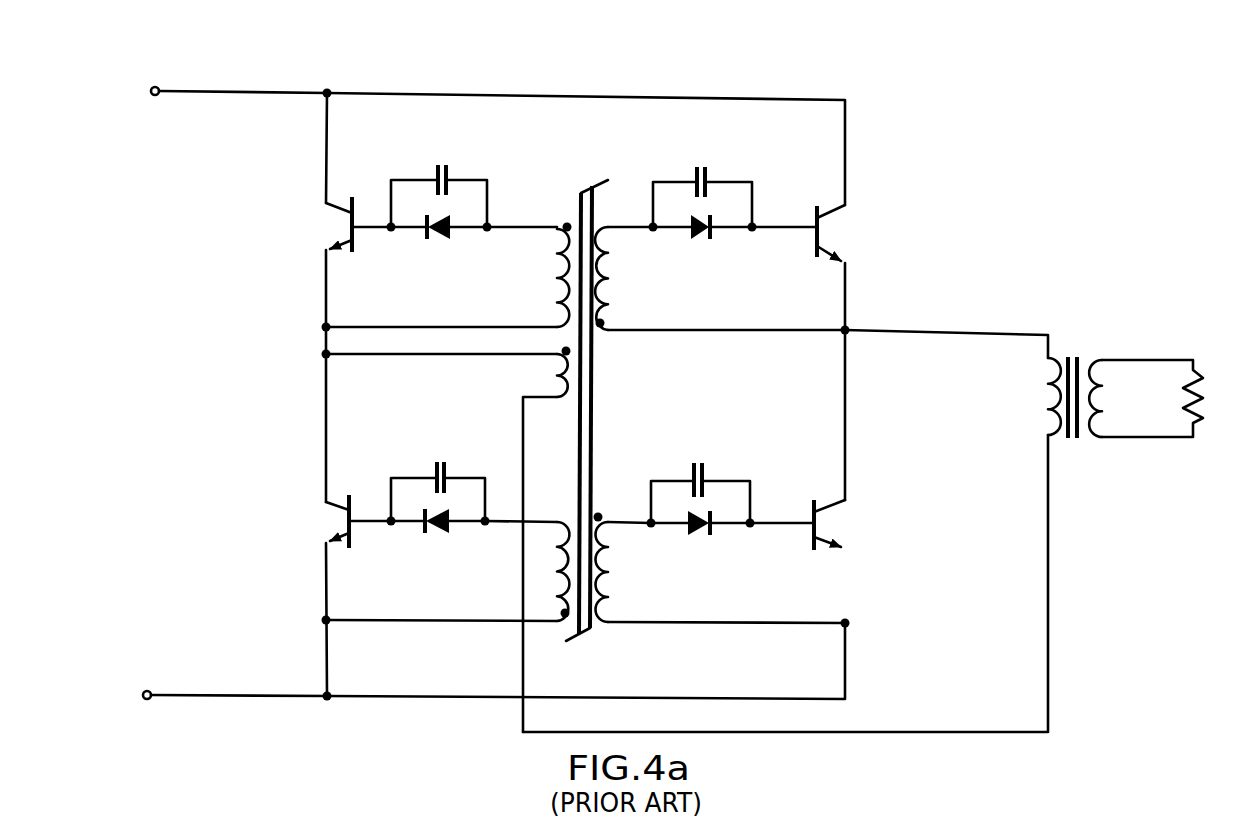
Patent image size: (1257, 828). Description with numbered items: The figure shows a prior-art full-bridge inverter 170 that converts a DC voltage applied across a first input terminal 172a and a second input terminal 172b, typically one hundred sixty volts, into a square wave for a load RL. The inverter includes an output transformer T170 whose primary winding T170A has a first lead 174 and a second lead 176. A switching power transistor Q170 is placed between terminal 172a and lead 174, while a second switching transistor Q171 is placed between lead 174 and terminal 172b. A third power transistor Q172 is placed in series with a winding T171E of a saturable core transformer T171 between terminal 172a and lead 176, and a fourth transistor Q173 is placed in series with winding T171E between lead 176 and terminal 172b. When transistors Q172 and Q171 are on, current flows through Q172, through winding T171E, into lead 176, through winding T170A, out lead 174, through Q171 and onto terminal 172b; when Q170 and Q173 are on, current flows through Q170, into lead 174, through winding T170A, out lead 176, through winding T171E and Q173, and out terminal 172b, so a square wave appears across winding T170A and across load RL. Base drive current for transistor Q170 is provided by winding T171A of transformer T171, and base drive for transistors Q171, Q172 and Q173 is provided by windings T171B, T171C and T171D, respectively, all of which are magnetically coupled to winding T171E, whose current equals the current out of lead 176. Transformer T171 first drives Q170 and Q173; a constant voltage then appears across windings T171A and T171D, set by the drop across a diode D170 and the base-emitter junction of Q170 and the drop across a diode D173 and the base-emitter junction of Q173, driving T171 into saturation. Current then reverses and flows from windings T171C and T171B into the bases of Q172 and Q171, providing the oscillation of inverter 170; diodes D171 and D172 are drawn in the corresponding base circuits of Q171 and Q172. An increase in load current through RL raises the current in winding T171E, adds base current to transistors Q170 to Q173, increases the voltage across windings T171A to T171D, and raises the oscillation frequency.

The full-bridge inverter 170 is at (864, 80).
The first input terminal 172a is at (340, 92).
The second input terminal 172b is at (331, 698).
The first lead 174 is at (1030, 334).
The second lead 176 is at (1050, 484).
The switching power transistor Q170 is at (843, 207).
The second switching transistor Q171 is at (845, 512).
The third power transistor Q172 is at (343, 204).
The fourth transistor Q173 is at (341, 510).
The diode D170 is at (702, 238).
The diode D171 is at (700, 534).
The diode D172 is at (440, 236).
The diode D173 is at (437, 530).
The saturable core transformer T171 is at (596, 204).
The winding T171A is at (606, 276).
The winding T171B is at (610, 574).
The winding T171C is at (558, 283).
The winding T171D is at (553, 575).
The winding T171E is at (557, 374).
The output transformer T170 is at (1078, 357).
The primary winding T170A is at (1046, 410).
The load RL is at (1203, 400).